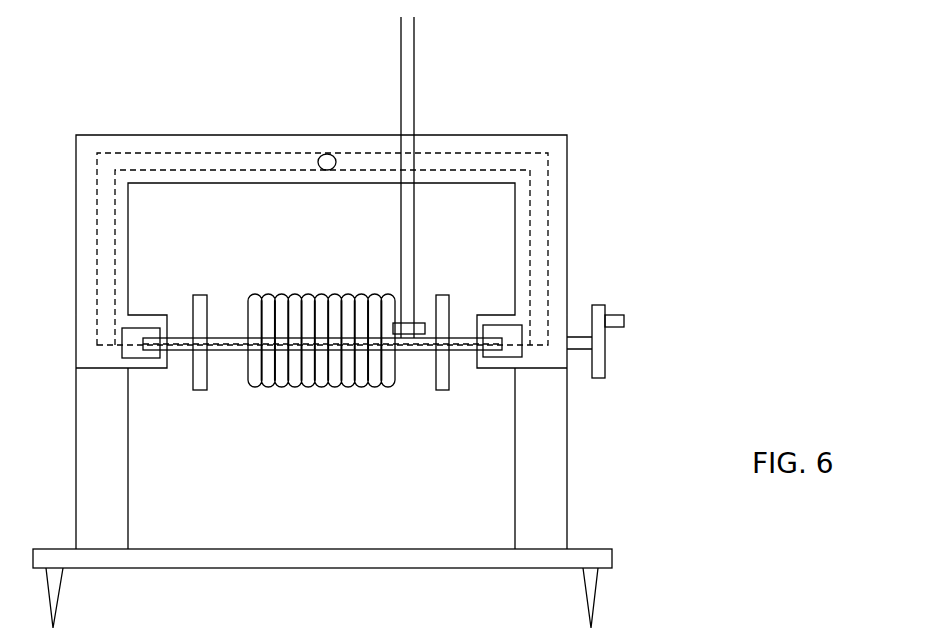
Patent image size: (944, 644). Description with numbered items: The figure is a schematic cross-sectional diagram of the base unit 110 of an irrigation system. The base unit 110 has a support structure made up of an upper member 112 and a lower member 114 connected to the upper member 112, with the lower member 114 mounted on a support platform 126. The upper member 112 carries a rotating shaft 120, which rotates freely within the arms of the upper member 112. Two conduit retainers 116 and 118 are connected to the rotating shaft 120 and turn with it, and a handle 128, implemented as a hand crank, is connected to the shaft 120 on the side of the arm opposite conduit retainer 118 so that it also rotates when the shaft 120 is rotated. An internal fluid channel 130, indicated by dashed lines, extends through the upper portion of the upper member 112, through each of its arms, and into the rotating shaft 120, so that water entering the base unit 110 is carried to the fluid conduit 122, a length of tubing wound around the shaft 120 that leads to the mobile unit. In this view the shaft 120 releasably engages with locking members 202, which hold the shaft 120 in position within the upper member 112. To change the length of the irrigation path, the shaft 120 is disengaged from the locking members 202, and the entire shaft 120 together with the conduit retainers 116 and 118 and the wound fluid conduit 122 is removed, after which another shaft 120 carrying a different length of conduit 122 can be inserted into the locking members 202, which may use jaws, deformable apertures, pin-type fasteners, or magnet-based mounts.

The base unit 110 is at (707, 96).
The upper member 112 is at (567, 168).
The lower member 114 is at (567, 444).
The conduit retainer 116 is at (208, 377).
The conduit retainer 118 is at (435, 369).
The rotating shaft 120 is at (180, 337).
The fluid conduit 122 is at (406, 50).
The support platform 126 is at (345, 558).
The handle 128 is at (607, 361).
The internal fluid channel 130 is at (495, 162).
The locking members 202 is at (138, 353).